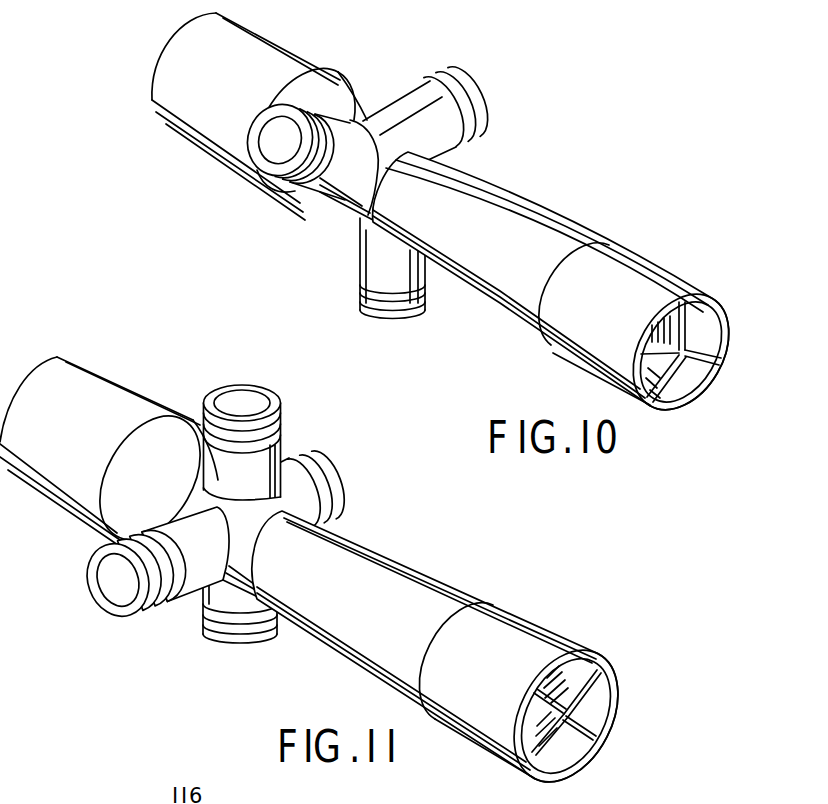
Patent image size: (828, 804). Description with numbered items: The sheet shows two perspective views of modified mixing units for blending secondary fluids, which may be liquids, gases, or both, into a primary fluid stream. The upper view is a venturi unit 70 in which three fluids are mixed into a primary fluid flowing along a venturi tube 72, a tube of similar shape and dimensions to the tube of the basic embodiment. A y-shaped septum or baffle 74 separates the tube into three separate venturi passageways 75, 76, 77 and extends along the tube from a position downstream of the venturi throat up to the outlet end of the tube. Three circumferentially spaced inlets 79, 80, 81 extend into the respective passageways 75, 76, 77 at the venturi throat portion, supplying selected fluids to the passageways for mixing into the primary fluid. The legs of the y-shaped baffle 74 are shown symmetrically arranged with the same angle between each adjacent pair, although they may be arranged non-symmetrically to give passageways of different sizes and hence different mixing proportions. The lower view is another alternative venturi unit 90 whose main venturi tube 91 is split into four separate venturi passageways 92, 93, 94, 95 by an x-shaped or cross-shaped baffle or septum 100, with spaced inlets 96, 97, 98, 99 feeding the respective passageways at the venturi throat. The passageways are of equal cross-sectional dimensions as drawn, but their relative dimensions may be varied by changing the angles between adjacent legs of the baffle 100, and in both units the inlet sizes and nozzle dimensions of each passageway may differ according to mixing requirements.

In FIG. 10, the venturi unit 70 is at (550, 181).
In FIG. 10, the venturi tube 72 is at (176, 47).
In FIG. 10, the y-shaped septum or baffle 74 is at (700, 357).
In FIG. 10, the venturi passageway 75 is at (640, 353).
In FIG. 10, the venturi passageway 76 is at (700, 378).
In FIG. 10, the venturi passageway 77 is at (697, 320).
In FIG. 10, the inlet 79 is at (347, 173).
In FIG. 10, the inlet 80 is at (370, 253).
In FIG. 10, the inlet 81 is at (462, 85).
In FIG. 11, the venturi unit 90 is at (500, 575).
In FIG. 11, the main venturi tube 91 is at (420, 577).
In FIG. 11, the venturi passageway 92 is at (530, 733).
In FIG. 11, the venturi passageway 93 is at (571, 754).
In FIG. 11, the venturi passageway 94 is at (603, 700).
In FIG. 11, the venturi passageway 95 is at (577, 670).
In FIG. 11, the inlet 96 is at (100, 549).
In FIG. 11, the inlet 97 is at (213, 613).
In FIG. 11, the inlet 98 is at (337, 490).
In FIG. 11, the inlet 99 is at (281, 408).
In FIG. 11, the x-shaped or cross-shaped baffle or septum 100 is at (613, 726).